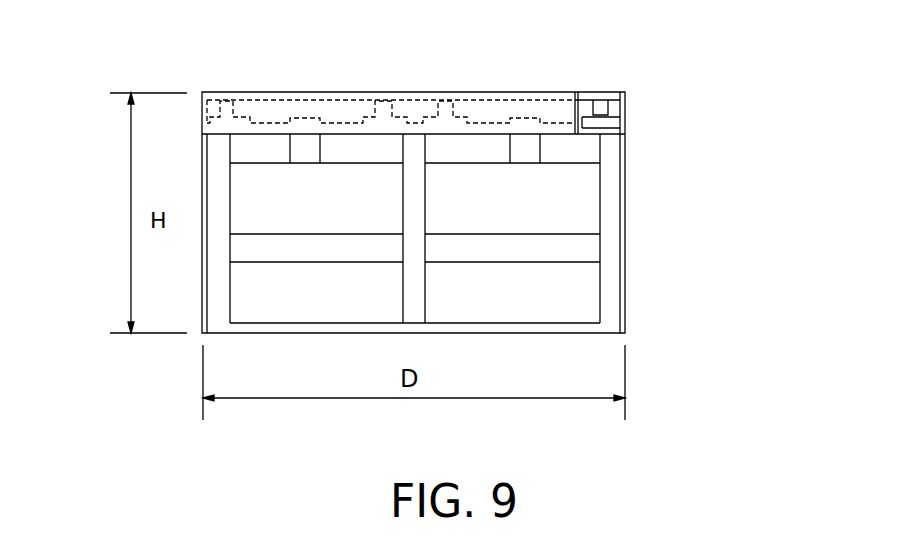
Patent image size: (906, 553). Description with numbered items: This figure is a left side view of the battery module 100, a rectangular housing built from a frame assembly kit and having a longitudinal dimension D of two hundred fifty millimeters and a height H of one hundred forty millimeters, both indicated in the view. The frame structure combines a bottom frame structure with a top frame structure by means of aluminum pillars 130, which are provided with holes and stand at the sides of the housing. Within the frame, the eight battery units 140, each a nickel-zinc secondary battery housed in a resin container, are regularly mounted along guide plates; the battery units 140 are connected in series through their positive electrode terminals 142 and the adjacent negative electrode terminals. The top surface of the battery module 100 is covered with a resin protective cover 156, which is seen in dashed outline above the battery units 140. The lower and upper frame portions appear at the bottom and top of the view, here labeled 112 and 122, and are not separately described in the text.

The battery module 100 is at (411, 208).
The bottom wall 112 is at (562, 330).
The top cover 122 is at (461, 99).
The pillars 130 is at (218, 171).
The battery units 140 is at (250, 294).
The positive electrode terminal 142 is at (600, 112).
The resin protective cover 156 is at (340, 112).